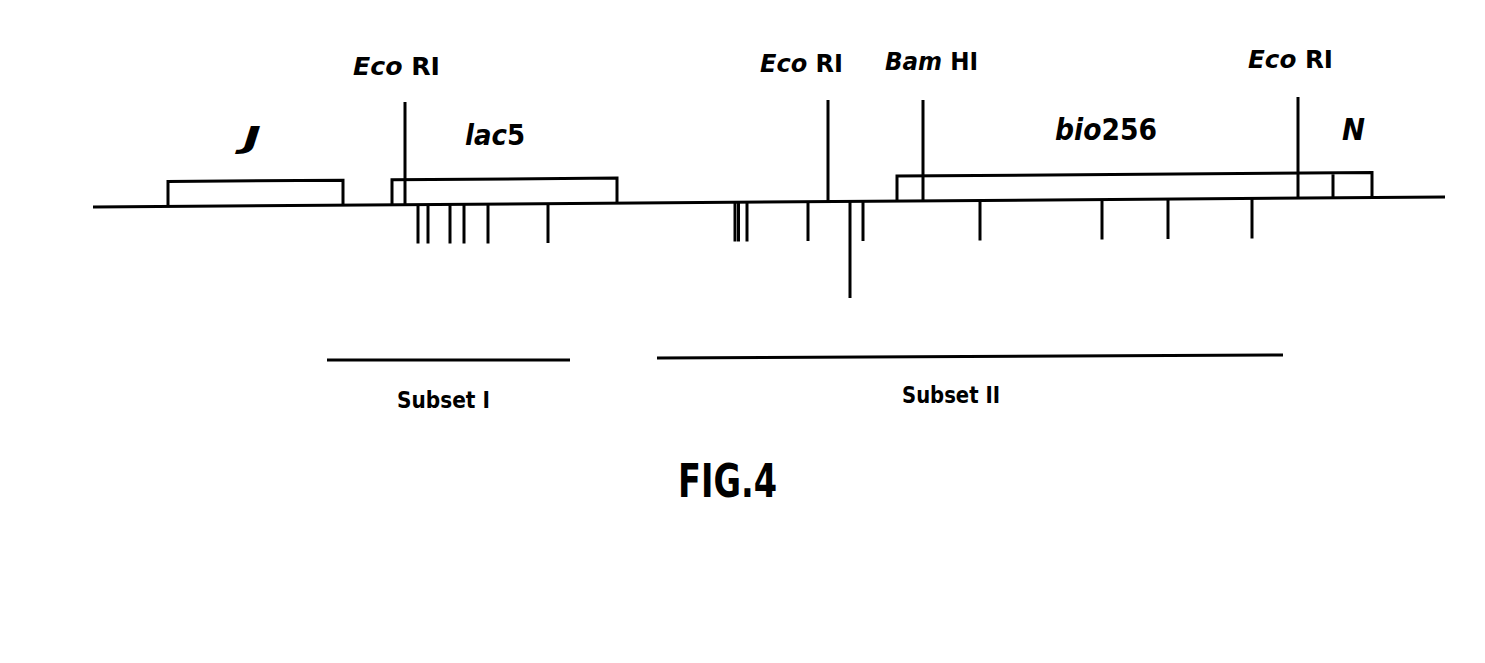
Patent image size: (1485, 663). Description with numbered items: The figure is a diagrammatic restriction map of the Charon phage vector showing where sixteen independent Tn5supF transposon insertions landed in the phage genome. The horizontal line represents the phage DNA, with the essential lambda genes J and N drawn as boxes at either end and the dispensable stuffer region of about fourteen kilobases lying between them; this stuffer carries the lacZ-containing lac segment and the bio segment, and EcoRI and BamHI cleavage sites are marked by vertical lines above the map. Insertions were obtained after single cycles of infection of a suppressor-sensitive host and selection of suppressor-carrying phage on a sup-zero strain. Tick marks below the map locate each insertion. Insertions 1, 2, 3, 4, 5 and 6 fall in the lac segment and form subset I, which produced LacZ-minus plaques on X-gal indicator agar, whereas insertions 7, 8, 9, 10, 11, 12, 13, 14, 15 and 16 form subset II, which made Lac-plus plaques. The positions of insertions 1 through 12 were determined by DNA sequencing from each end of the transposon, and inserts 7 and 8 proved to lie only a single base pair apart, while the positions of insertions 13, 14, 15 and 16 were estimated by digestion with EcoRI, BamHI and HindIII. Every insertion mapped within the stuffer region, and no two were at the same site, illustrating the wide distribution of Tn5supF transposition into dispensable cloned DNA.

The Tn5supF insertion 1 is at (418, 244).
The Tn5supF insertion 2 is at (428, 244).
The Tn5supF insertion 3 is at (450, 244).
The Tn5supF insertion 4 is at (464, 244).
The Tn5supF insertion 5 is at (488, 244).
The Tn5supF insertion 6 is at (542, 244).
The Tn5supF insertion 7 is at (735, 242).
The Tn5supF insertion 8 is at (738, 242).
The Tn5supF insertion 9 is at (747, 242).
The Tn5supF insertion 10 is at (808, 241).
The Tn5supF insertion 11 is at (845, 268).
The Tn5supF insertion 12 is at (863, 241).
The Tn5supF insertion 13 is at (975, 241).
The Tn5supF insertion 14 is at (1103, 241).
The Tn5supF insertion 15 is at (1169, 240).
The Tn5supF insertion 16 is at (1252, 240).